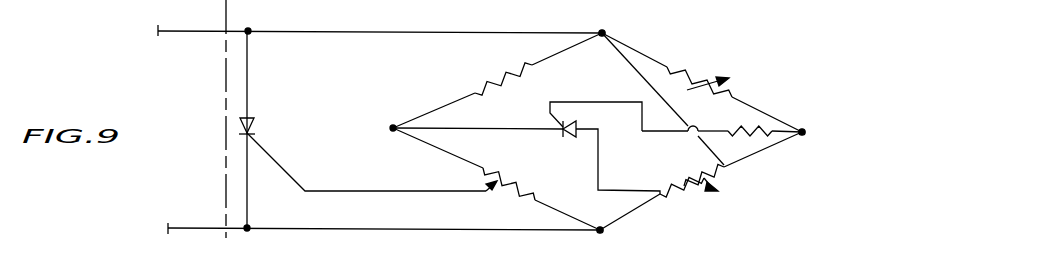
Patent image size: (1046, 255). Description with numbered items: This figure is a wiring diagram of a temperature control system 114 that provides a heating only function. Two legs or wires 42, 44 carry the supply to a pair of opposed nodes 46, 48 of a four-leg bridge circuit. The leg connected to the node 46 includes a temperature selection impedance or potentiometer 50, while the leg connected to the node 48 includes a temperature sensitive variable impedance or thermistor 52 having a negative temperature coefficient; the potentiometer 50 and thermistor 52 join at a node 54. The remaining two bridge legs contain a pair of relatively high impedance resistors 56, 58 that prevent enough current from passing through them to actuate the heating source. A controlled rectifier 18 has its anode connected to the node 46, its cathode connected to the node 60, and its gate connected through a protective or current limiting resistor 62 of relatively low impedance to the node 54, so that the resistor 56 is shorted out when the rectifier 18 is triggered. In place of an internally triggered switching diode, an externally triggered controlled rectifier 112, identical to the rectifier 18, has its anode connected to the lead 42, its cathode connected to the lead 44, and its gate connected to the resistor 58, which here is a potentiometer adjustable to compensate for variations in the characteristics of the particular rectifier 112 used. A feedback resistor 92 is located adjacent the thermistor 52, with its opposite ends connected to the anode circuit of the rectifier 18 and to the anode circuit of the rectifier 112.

The leg or wire 42 is at (338, 30).
The leg or wire 44 is at (437, 229).
The externally triggered controlled rectifier 112 is at (256, 128).
The node 46 is at (605, 33).
The temperature control system 114 is at (583, 28).
The resistor 56 is at (512, 67).
The node 60 is at (391, 131).
The controlled rectifier 18 is at (567, 137).
The resistor 58 is at (515, 183).
The node 48 is at (604, 233).
The temperature selection impedance or potentiometer 50 is at (703, 80).
The node 54 is at (804, 131).
The protective or current limiting resistor 62 is at (760, 136).
The temperature sensitive variable impedance or thermistor 52 is at (719, 181).
The feedback resistor 92 is at (690, 169).